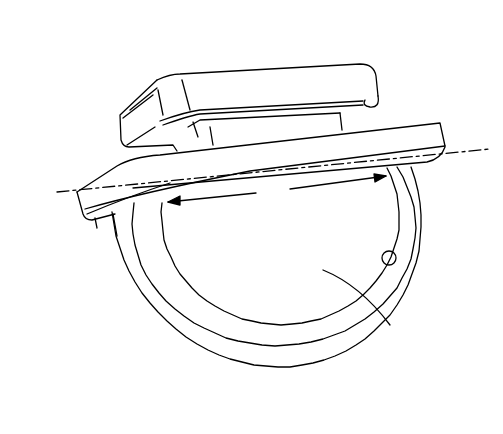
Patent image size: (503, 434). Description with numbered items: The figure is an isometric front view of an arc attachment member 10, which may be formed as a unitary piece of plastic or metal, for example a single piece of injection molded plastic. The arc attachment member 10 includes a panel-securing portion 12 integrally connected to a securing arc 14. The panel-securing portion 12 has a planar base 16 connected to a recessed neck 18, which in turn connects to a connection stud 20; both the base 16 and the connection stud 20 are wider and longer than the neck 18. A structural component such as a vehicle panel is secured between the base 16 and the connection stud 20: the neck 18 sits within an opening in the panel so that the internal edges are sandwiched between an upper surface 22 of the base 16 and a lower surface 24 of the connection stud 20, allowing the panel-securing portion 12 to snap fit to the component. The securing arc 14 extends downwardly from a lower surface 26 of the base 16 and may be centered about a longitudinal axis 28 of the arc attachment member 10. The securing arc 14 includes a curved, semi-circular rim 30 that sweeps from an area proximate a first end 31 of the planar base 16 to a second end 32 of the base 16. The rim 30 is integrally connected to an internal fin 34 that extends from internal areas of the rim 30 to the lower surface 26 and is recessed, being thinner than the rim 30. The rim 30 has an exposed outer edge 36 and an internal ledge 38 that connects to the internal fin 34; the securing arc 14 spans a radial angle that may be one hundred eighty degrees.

The arc attachment member 10 is at (98, 88).
The panel-securing portion 12 is at (407, 46).
The securing arc 14 is at (432, 231).
The planar base 16 is at (75, 207).
The recessed neck 18 is at (343, 123).
The connection stud 20 is at (362, 64).
The upper surface 22 is at (117, 163).
The lower surface 24 is at (380, 102).
The lower surface 26 is at (100, 220).
The longitudinal axis 28 is at (68, 192).
The rim 30 is at (163, 305).
The first end 31 is at (113, 228).
The second end 32 is at (427, 162).
The internal fin 34 is at (395, 327).
The exposed outer edge 36 is at (340, 358).
The internal ledge 38 is at (397, 260).